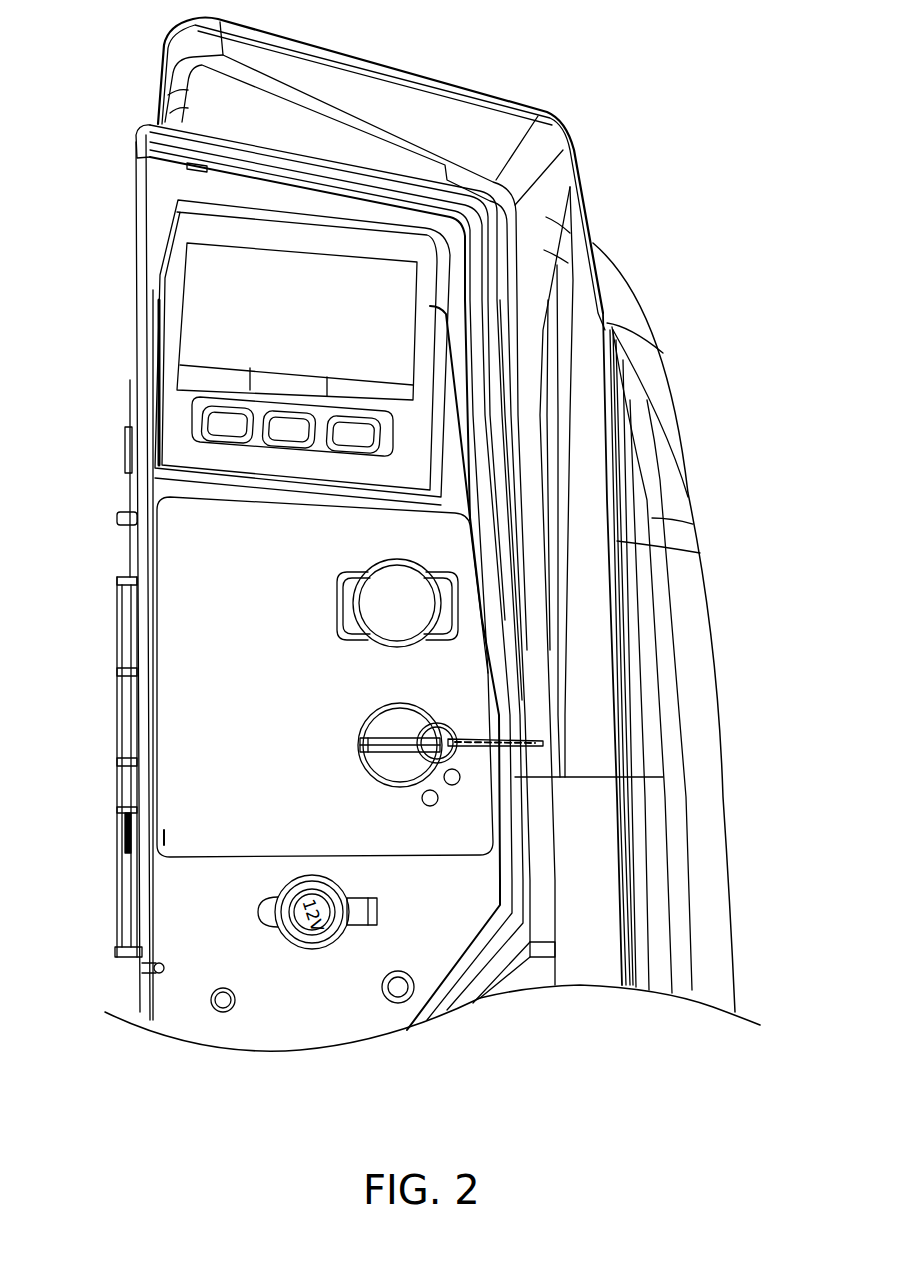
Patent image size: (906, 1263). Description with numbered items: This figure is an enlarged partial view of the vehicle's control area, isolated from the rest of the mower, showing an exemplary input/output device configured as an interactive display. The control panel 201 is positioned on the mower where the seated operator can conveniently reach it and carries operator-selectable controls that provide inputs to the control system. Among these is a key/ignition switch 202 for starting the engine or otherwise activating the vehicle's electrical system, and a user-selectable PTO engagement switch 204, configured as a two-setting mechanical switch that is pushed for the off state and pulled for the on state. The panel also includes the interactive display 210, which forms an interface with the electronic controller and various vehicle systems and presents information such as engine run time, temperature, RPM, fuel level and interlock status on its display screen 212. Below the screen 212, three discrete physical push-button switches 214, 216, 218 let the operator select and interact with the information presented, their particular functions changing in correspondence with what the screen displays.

The control panel 201 is at (448, 557).
The key/ignition switch 202 is at (378, 785).
The PTO engagement switch 204 is at (377, 648).
The interactive display 210 is at (168, 232).
The display screen 212 is at (300, 294).
The push-button switch 214 is at (357, 448).
The push-button switch 216 is at (295, 438).
The push-button switch 218 is at (232, 432).